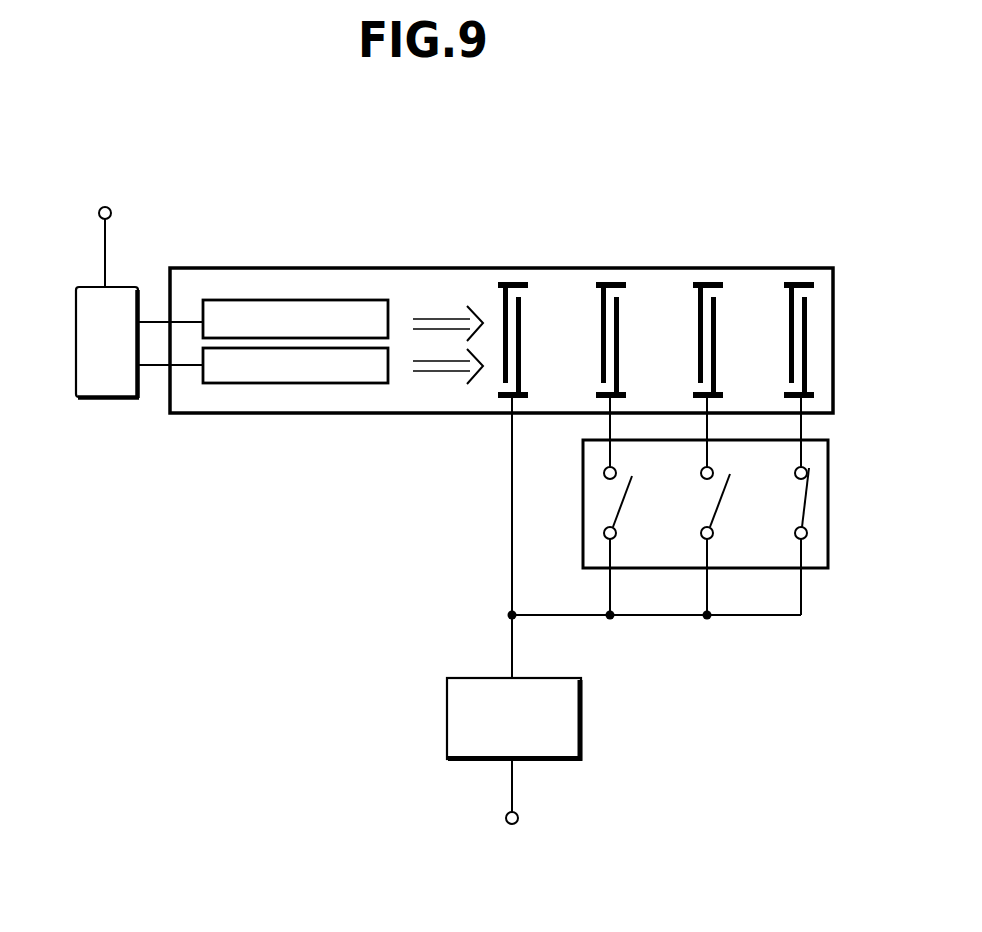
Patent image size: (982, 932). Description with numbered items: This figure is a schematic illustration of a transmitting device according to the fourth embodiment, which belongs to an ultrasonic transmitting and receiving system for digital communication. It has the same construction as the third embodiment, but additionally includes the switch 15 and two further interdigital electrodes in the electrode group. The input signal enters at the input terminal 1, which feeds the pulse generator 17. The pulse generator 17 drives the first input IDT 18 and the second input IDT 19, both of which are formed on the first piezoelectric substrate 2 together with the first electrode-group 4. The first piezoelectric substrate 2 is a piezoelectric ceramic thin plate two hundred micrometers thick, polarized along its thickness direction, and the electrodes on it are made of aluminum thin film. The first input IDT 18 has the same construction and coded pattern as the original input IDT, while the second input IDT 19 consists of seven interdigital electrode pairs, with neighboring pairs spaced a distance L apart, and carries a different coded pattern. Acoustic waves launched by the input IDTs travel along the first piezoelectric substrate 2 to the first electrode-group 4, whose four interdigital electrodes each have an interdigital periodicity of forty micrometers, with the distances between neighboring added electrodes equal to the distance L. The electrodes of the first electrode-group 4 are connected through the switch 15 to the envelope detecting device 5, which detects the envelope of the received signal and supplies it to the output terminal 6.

The input terminal 1 is at (183, 218).
The first piezoelectric substrate 2 is at (365, 288).
The first electrode-group 4 is at (810, 218).
The envelope detecting device 5 is at (378, 770).
The output terminal 6 is at (598, 835).
The switch 15 is at (815, 558).
The pulse generator 17 is at (28, 437).
The first input IDT 18 is at (242, 455).
The second input IDT 19 is at (201, 513).